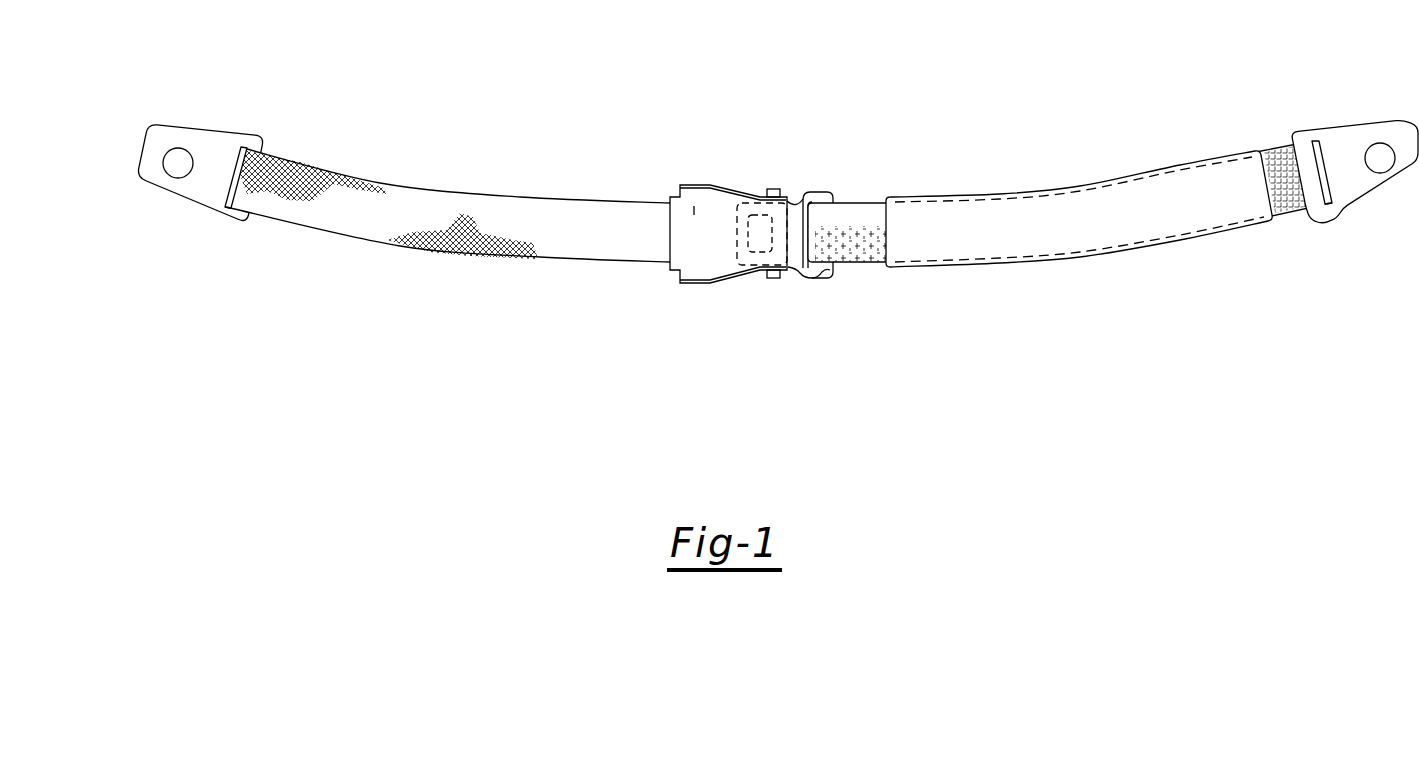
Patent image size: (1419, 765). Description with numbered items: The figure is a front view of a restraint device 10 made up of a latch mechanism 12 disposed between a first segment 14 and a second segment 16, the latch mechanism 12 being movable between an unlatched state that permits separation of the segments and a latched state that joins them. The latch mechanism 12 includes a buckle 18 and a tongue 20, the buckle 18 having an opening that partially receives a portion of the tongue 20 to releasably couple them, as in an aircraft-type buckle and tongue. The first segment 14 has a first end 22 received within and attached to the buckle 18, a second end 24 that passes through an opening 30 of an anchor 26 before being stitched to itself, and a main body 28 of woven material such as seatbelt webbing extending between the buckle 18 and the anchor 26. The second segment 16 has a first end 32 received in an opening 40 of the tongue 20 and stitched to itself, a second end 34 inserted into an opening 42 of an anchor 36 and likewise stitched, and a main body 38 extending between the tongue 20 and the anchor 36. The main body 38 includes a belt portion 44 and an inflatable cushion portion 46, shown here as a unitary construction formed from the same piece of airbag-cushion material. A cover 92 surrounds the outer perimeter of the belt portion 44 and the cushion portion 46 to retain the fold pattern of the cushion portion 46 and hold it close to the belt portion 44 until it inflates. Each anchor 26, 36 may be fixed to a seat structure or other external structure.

The restraint device 10 is at (1052, 106).
The latch mechanism 12 is at (738, 285).
The first segment 14 is at (452, 196).
The second segment 16 is at (1185, 164).
The buckle 18 is at (710, 188).
The tongue 20 is at (828, 276).
The first end 22 is at (693, 207).
The second end 24 is at (243, 148).
The anchor 26 is at (207, 140).
The main body 28 is at (378, 223).
The opening 30 is at (214, 204).
The first end 32 is at (797, 201).
The second end 34 is at (1324, 140).
The anchor 36 is at (1363, 136).
The main body 38 is at (868, 267).
The opening 40 is at (817, 279).
The opening 42 is at (1349, 212).
The belt portion 44 is at (850, 212).
The cushion portion 46 is at (1110, 229).
The cover 92 is at (995, 197).